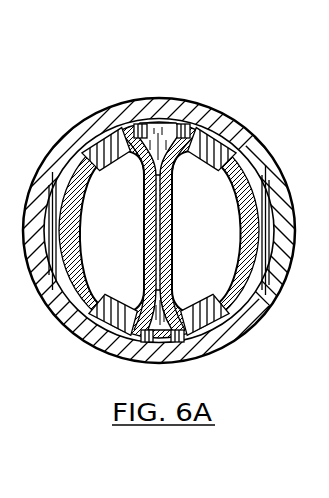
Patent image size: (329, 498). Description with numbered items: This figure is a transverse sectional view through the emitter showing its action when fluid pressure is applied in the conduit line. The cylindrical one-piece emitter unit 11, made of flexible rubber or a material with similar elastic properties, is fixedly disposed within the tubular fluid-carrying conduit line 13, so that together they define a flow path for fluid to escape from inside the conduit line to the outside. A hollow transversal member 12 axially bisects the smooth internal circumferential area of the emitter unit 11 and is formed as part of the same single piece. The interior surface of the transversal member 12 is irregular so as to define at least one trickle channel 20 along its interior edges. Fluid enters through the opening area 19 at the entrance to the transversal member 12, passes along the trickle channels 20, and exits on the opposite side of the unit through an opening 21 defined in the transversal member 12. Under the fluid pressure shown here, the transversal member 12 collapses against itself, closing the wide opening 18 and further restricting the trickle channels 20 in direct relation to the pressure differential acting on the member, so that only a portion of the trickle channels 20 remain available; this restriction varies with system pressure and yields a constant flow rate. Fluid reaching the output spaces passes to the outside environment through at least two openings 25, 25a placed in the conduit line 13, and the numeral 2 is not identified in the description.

The catheter 2 is at (324, 359).
The emitter unit 11 is at (50, 199).
The transversal member 12 is at (162, 195).
The conduit line 13 is at (281, 189).
The wide opening 18 is at (173, 176).
The opening area 19 is at (163, 122).
The trickle channel 20 is at (152, 223).
The opening 21 is at (144, 301).
The opening 25 is at (246, 140).
The opening 25a is at (72, 320).